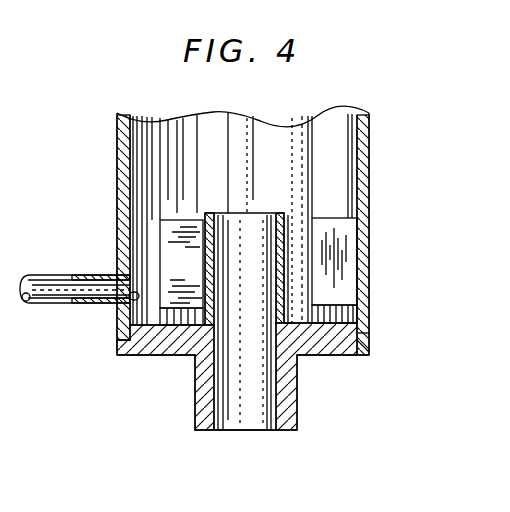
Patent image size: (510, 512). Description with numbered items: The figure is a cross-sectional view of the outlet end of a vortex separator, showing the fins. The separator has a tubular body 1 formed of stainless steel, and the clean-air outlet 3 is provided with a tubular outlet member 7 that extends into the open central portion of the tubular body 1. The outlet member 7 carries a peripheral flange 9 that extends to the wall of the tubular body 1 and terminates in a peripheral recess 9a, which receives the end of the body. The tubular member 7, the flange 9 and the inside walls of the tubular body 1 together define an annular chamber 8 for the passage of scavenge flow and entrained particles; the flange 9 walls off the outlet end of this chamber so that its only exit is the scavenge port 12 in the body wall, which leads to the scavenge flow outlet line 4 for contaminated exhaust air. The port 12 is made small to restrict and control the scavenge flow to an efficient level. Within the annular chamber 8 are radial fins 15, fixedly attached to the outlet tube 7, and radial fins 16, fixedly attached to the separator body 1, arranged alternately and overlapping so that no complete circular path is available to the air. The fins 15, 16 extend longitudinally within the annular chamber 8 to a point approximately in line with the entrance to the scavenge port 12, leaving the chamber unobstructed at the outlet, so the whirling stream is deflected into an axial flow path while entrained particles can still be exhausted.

The tubular body 1 is at (362, 144).
The outlet 3 is at (250, 413).
The scavenge flow outlet line 4 is at (52, 283).
The tubular outlet member 7 is at (283, 227).
The annular chamber 8 is at (298, 288).
The peripheral flange 9 is at (343, 357).
The peripheral recess 9a is at (372, 318).
The scavenge port 12 is at (131, 300).
The radial fins 15 is at (170, 225).
The radial fins 16 is at (330, 228).